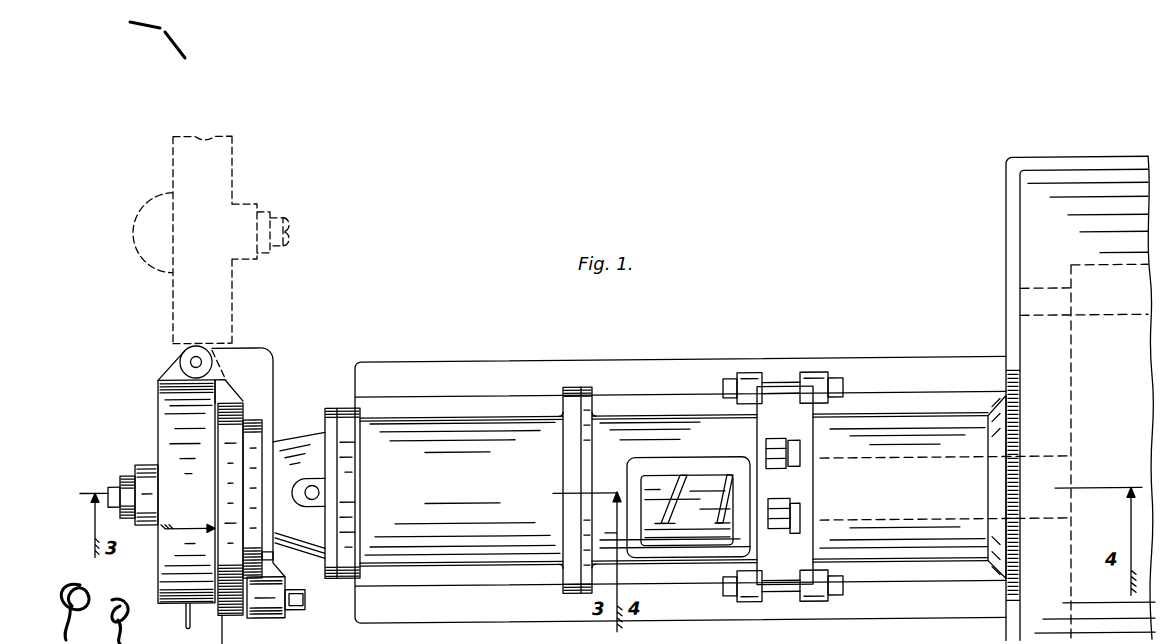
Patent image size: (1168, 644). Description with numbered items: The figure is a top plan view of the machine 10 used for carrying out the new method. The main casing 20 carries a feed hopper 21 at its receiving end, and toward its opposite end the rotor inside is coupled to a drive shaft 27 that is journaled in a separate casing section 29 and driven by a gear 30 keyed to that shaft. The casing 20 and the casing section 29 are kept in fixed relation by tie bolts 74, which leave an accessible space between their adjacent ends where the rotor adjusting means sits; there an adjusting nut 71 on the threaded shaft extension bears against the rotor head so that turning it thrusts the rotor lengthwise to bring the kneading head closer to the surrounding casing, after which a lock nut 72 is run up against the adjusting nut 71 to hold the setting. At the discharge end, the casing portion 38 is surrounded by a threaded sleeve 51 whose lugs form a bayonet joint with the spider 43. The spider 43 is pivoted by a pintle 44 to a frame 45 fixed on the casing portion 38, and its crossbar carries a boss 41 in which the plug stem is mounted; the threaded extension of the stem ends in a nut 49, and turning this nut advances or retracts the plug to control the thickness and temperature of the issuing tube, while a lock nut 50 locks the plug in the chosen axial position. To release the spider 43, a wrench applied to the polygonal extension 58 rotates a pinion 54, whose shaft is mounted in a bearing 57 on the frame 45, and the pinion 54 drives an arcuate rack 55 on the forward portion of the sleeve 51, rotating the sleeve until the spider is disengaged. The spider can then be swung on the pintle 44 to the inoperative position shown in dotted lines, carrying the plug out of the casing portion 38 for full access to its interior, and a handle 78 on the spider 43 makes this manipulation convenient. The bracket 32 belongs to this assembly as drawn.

The pump unit 10 is at (188, 520).
The casing 20 is at (625, 432).
The feed hopper 21 is at (672, 468).
The drive shaft 27 is at (950, 472).
The casing section 29 is at (921, 435).
The gear 30 is at (1085, 384).
The bracket 32 is at (297, 443).
The casing portion 38 is at (255, 514).
The boss 41 is at (143, 462).
The spider 43 is at (158, 408).
The pintle 44 is at (198, 357).
The frame 45 is at (262, 366).
The nut 49 is at (108, 488).
The lock nut 50 is at (125, 474).
The sleeve 51 is at (243, 402).
The pinion 54 is at (232, 612).
The arcuate rack 55 is at (264, 557).
The bearing 57 is at (270, 614).
The polygonal extension 58 is at (305, 603).
The adjusting nut 71 is at (770, 455).
The lock nut 72 is at (793, 512).
The tie bolts 74 is at (787, 385).
The handle 78 is at (186, 620).